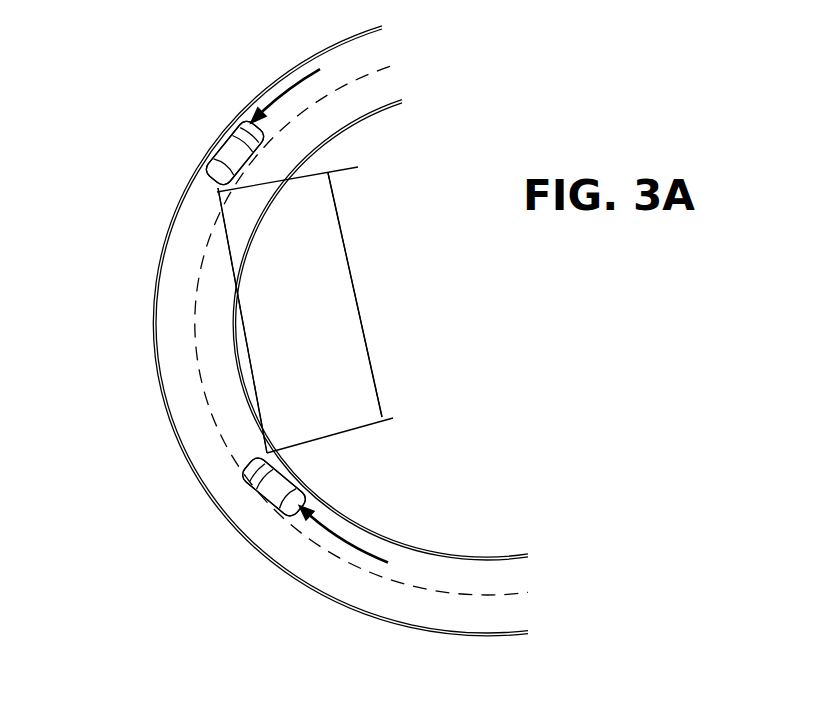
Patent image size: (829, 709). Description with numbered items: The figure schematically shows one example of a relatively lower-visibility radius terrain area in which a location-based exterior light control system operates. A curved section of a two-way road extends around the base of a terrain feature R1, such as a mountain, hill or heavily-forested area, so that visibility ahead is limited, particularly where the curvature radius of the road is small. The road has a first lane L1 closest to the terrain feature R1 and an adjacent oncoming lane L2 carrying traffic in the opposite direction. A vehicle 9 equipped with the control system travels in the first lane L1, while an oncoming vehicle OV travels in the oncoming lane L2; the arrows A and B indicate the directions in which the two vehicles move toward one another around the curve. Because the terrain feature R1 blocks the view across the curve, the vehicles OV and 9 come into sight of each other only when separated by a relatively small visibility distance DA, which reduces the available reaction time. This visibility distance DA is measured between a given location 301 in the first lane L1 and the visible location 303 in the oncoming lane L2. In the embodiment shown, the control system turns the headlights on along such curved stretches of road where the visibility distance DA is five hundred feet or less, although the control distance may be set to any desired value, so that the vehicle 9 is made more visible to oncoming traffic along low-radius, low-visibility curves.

The travel direction arrow of vehicle 303 A is at (293, 83).
The travel direction arrow of vehicle 301 B is at (345, 545).
The visible location 303 is at (203, 167).
The oncoming vehicle OV is at (202, 172).
The location 301 is at (273, 510).
The vehicle 9 is at (246, 472).
The terrain area R1 is at (318, 293).
The visibility distance DA is at (363, 342).
The first lane L1 is at (460, 572).
The oncoming lane L2 is at (173, 377).